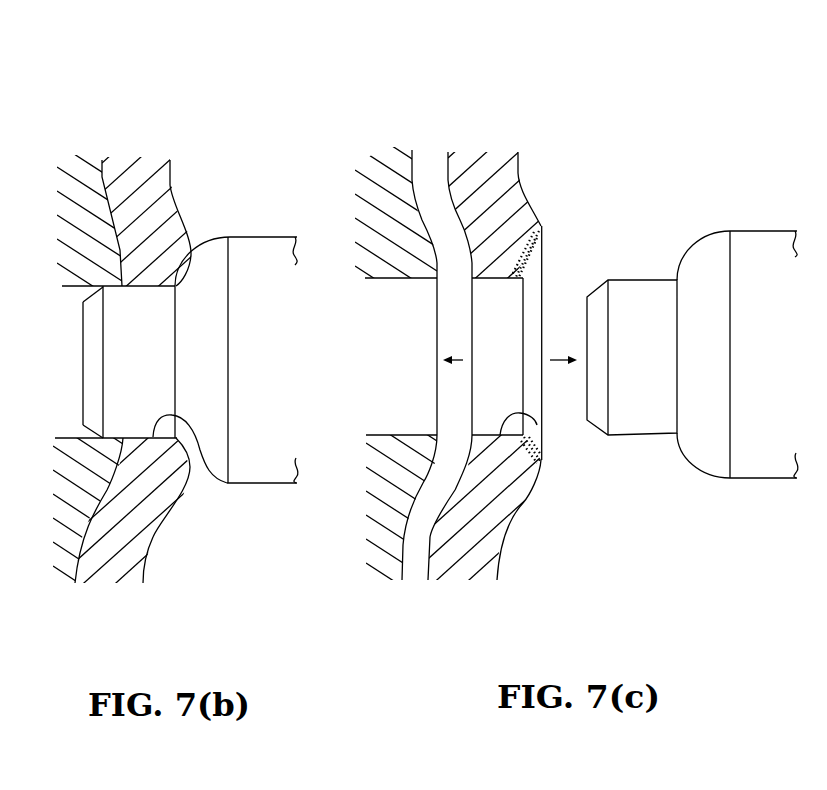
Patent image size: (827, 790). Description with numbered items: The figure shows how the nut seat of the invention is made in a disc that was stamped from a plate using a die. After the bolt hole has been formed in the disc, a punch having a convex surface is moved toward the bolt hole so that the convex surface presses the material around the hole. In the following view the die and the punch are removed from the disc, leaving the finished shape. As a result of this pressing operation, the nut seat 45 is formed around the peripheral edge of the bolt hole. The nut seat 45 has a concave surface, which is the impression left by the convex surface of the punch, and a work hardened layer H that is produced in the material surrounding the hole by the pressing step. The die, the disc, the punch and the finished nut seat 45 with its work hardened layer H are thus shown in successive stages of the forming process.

The nut seat 45 is at (527, 276).
The work hardened layer H is at (543, 228).